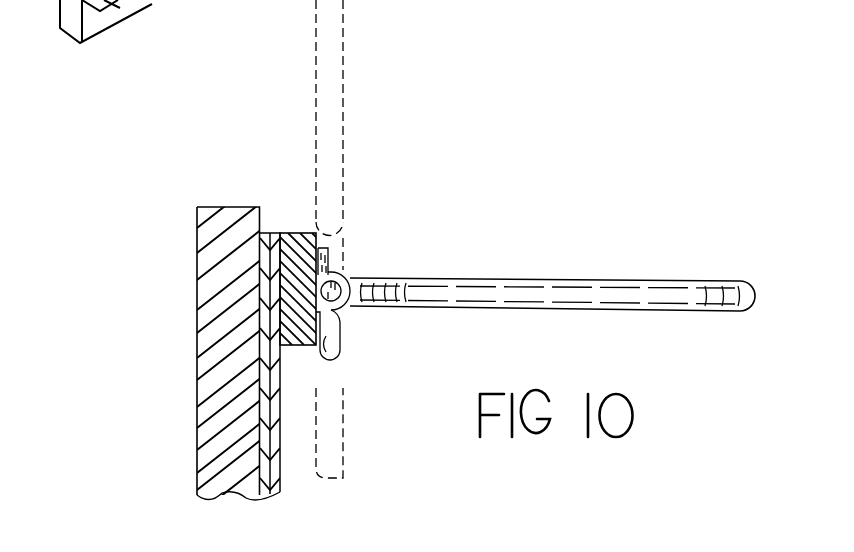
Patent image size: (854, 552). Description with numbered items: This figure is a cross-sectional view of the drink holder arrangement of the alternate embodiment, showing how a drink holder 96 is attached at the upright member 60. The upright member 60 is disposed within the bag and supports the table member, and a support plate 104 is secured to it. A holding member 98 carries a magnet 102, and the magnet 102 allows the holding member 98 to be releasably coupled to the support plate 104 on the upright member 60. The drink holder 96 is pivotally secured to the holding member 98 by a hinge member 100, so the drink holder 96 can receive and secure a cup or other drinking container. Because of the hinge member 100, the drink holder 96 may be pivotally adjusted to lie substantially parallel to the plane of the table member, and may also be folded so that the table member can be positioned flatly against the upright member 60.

The upright member 60 is at (224, 301).
The drink holder 96 is at (587, 292).
The holding member 98 is at (311, 334).
The hinge member 100 is at (347, 277).
The magnet 102 is at (286, 233).
The support plate 104 is at (268, 257).